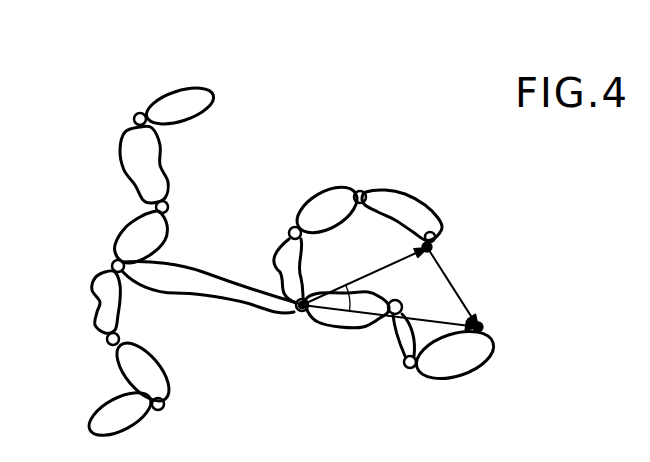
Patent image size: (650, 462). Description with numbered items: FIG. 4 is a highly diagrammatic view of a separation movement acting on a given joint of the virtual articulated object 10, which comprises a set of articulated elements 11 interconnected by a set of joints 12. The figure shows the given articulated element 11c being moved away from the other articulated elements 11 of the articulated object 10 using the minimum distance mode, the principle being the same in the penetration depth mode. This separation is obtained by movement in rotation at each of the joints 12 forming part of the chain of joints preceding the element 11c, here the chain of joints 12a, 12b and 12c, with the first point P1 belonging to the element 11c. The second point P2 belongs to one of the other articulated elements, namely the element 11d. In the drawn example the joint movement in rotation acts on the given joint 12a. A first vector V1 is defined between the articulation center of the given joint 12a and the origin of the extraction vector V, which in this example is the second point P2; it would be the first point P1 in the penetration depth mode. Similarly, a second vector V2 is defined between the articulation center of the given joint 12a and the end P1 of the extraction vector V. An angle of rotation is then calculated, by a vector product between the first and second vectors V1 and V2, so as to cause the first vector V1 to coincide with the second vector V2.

The virtual articulated object 10 is at (250, 84).
The articulated elements 11 is at (170, 102).
The joints 12 is at (173, 207).
The given articulated element 11c is at (450, 360).
The articulated element 11d is at (415, 213).
The given joint 12a is at (300, 313).
The joint 12b is at (390, 315).
The joint 12c is at (410, 369).
The first point P1 is at (488, 326).
The second point P2 is at (432, 239).
The extraction vector V is at (463, 265).
The first vector V1 is at (357, 292).
The second vector V2 is at (347, 326).